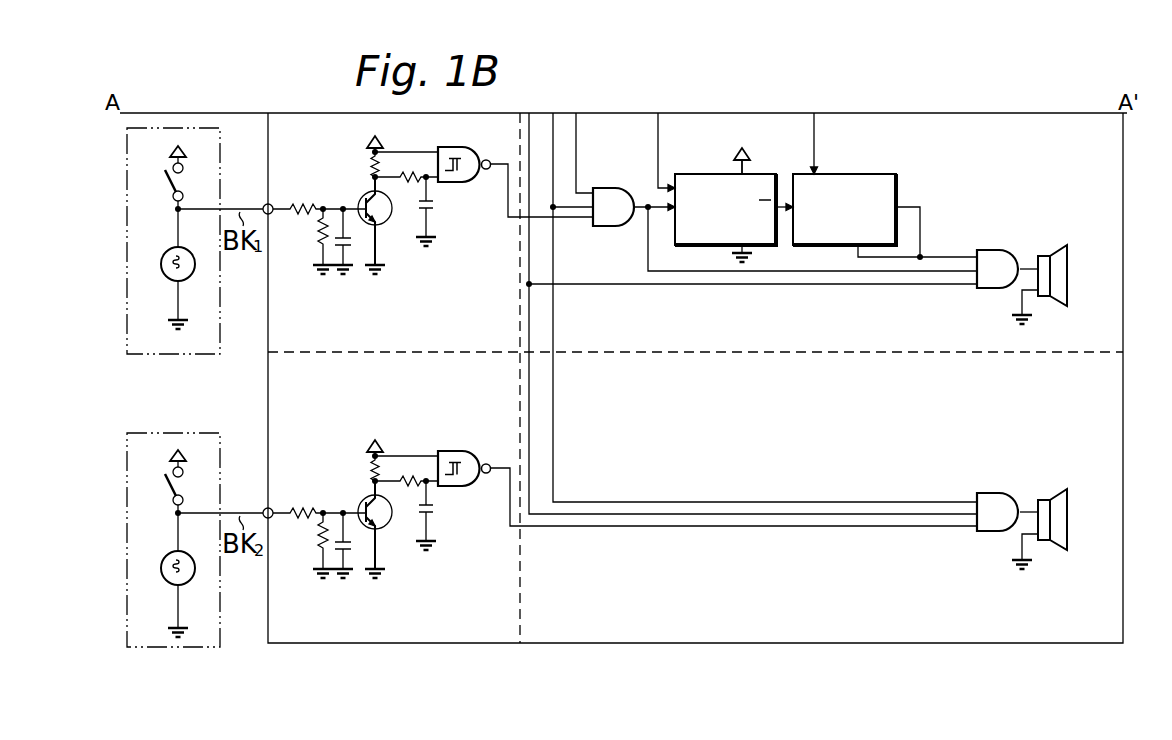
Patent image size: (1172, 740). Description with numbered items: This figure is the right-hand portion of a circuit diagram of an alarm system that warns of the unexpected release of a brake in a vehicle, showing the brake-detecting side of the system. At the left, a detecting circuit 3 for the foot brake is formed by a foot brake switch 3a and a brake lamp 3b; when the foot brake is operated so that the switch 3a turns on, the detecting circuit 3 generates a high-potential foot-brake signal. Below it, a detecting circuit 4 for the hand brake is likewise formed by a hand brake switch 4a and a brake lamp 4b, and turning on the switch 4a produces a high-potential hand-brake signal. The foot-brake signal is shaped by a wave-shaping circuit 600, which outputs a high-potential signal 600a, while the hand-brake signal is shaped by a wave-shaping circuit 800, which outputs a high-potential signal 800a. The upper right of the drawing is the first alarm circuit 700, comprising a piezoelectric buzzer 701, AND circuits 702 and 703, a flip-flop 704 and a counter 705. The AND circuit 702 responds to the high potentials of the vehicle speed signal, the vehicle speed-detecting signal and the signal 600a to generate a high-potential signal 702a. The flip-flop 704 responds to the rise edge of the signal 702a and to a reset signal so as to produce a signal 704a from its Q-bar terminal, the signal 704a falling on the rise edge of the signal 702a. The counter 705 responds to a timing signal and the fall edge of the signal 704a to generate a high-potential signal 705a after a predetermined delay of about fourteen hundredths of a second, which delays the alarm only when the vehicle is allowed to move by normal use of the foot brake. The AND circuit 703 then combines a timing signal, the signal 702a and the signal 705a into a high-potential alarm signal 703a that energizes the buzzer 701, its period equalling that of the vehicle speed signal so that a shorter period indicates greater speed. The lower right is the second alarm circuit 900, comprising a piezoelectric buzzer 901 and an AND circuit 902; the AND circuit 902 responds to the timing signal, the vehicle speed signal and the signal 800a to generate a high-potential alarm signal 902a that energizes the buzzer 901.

The detecting circuit 3 is at (197, 355).
The foot brake switch 3a is at (183, 183).
The brake lamp 3b is at (170, 278).
The detecting circuit 4 is at (197, 648).
The hand brake switch 4a is at (183, 487).
The brake lamp 4b is at (170, 583).
The wave-shaping circuit 600 is at (273, 333).
The signal 600a is at (508, 212).
The first alarm circuit 700 is at (1125, 300).
The piezoelectric buzzer 701 is at (1058, 256).
The AND circuit 702 is at (606, 228).
The signal 702a is at (660, 200).
The AND circuit 703 is at (993, 290).
The alarm signal 703a is at (1028, 262).
The flip-flop 704 is at (708, 173).
The signal 704a is at (781, 212).
The counter 705 is at (877, 173).
The signal 705a is at (946, 257).
The wave-shaping circuit 800 is at (400, 648).
The signal 800a is at (508, 510).
The second alarm circuit 900 is at (775, 640).
The piezoelectric buzzer 901 is at (1058, 497).
The AND circuit 902 is at (990, 531).
The alarm signal 902a is at (1024, 505).